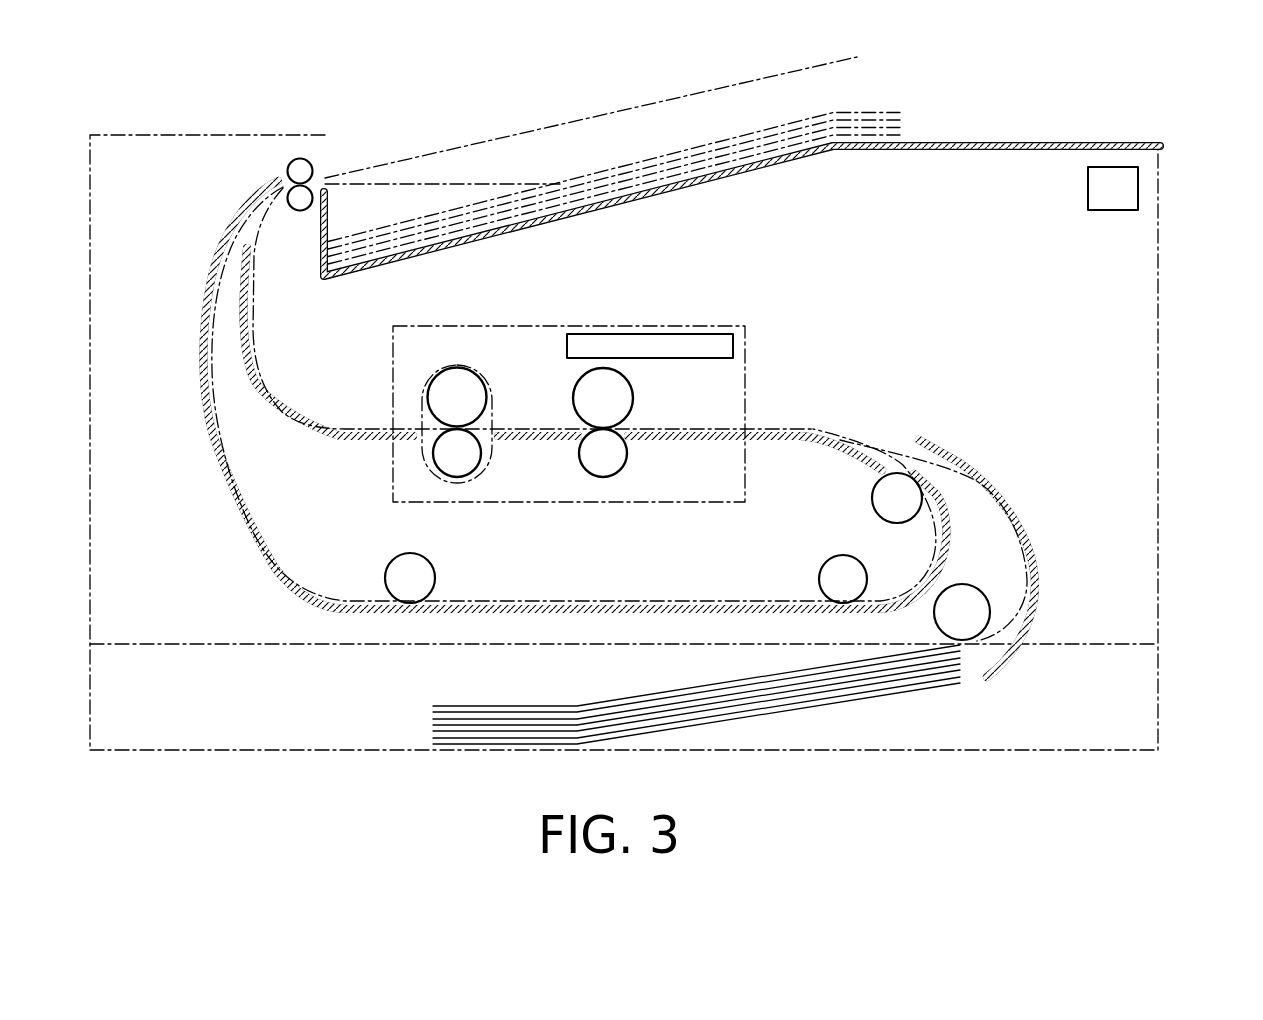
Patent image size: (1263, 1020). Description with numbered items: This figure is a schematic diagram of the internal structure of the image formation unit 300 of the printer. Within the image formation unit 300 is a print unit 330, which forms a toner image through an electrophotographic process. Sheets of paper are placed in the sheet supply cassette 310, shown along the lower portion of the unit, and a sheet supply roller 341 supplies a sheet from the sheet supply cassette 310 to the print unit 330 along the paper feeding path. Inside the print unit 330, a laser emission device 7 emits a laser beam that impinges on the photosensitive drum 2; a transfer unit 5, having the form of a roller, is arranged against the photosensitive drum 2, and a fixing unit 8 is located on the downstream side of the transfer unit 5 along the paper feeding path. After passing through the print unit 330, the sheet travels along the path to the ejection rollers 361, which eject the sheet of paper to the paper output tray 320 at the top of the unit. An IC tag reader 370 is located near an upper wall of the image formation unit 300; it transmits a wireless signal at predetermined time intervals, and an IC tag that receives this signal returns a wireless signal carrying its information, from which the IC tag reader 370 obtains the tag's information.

The image formation unit 300 is at (1067, 108).
The sheet supply cassette 310 is at (1158, 677).
The paper output tray 320 is at (975, 142).
The print unit 330 is at (686, 290).
The sheet supply roller 341 is at (998, 563).
The ejection rollers 361 is at (313, 192).
The IC tag reader 370 is at (1113, 200).
The photosensitive drum 2 is at (625, 402).
The transfer unit 5 is at (586, 455).
The laser emission device 7 is at (713, 358).
The fixing unit 8 is at (492, 390).